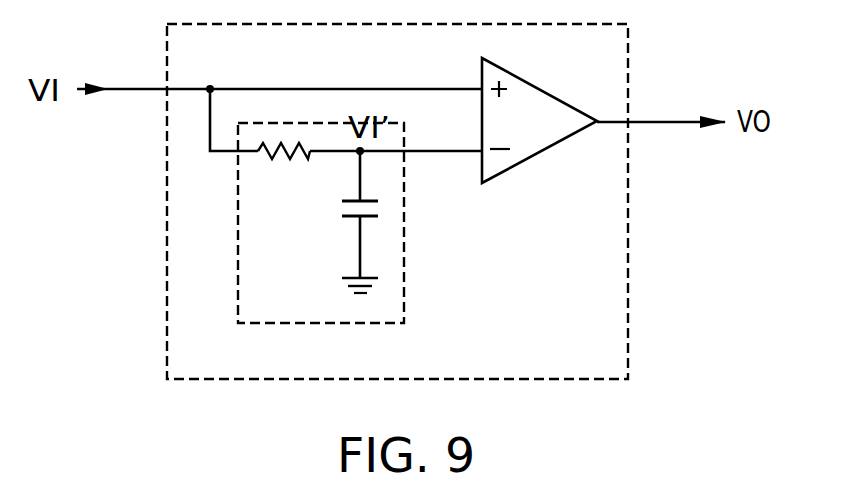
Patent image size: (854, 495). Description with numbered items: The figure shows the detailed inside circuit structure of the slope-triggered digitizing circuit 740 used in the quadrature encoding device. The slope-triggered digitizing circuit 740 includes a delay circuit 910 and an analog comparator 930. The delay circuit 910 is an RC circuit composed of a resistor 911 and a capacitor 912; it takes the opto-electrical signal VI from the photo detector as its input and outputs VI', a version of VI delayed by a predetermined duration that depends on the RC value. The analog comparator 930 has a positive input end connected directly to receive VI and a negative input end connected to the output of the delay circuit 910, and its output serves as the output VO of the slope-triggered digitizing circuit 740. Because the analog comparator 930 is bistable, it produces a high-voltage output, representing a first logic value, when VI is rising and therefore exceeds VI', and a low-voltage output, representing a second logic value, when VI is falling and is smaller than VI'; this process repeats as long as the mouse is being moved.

The slope-triggered digitizing circuit 740 is at (628, 72).
The delay circuit 910 is at (404, 250).
The resistor 911 is at (280, 163).
The capacitor 912 is at (350, 218).
The analog comparator 930 is at (553, 147).